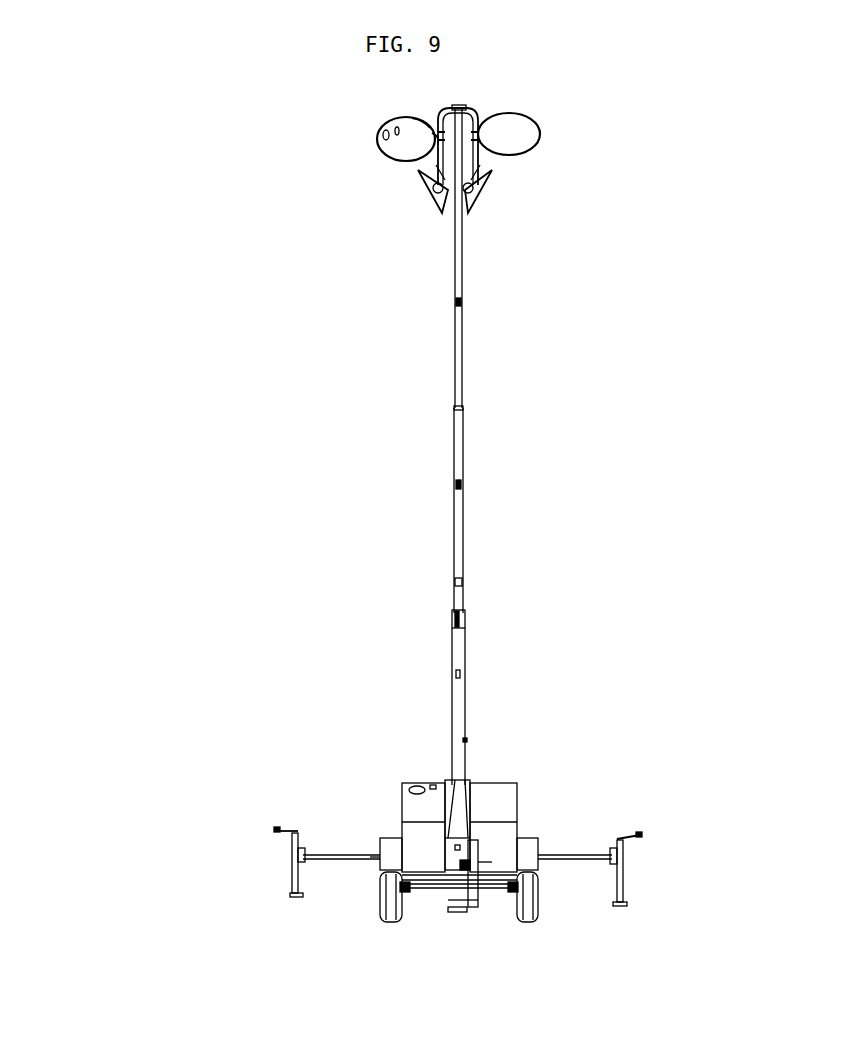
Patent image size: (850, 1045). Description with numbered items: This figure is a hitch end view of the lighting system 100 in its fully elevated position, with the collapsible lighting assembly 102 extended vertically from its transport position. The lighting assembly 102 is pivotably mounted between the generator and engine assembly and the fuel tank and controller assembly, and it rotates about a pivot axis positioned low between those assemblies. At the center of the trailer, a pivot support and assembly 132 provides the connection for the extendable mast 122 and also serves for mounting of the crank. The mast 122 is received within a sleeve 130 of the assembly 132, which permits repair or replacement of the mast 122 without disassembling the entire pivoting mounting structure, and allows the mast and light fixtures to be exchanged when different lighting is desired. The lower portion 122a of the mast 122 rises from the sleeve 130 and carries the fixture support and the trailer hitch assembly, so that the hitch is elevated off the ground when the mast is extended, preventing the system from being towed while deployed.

The lighting system 100 is at (300, 647).
The collapsible lighting assembly 102 is at (435, 445).
The extendable mast 122 is at (460, 464).
The lower portion of the extendable mast 122a is at (460, 710).
The sleeve 130 is at (453, 803).
The pivot support and assembly 132 is at (466, 815).